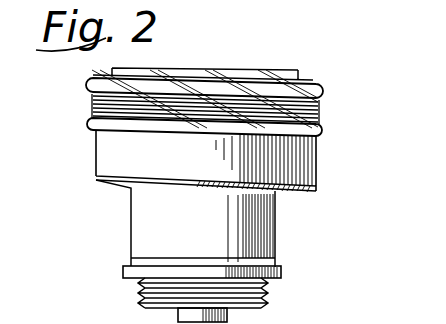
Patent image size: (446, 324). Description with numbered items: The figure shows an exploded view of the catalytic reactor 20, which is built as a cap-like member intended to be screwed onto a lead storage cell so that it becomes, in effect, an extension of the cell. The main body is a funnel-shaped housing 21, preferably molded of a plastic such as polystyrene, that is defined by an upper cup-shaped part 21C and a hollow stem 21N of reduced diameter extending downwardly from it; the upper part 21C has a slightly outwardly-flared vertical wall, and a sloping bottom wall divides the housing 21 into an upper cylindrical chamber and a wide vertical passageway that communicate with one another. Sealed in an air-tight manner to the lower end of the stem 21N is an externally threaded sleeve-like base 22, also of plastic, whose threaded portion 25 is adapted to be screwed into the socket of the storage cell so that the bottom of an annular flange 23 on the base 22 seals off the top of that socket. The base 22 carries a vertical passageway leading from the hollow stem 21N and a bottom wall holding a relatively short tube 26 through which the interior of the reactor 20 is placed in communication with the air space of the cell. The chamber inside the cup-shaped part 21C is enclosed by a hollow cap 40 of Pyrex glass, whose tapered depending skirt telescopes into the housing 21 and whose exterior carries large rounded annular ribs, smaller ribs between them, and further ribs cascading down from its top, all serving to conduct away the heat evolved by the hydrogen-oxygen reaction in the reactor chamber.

The reactor 20 is at (330, 81).
The hollow cap 40 is at (330, 128).
The funnel-shaped housing 21 is at (214, 174).
The upper cup-shaped part 21C is at (318, 163).
The hollow stem 21N is at (226, 223).
The externally threaded sleeve-like base 22 is at (265, 265).
The annular flange 23 is at (123, 270).
The threaded portion 25 is at (140, 300).
The tube 26 is at (228, 318).